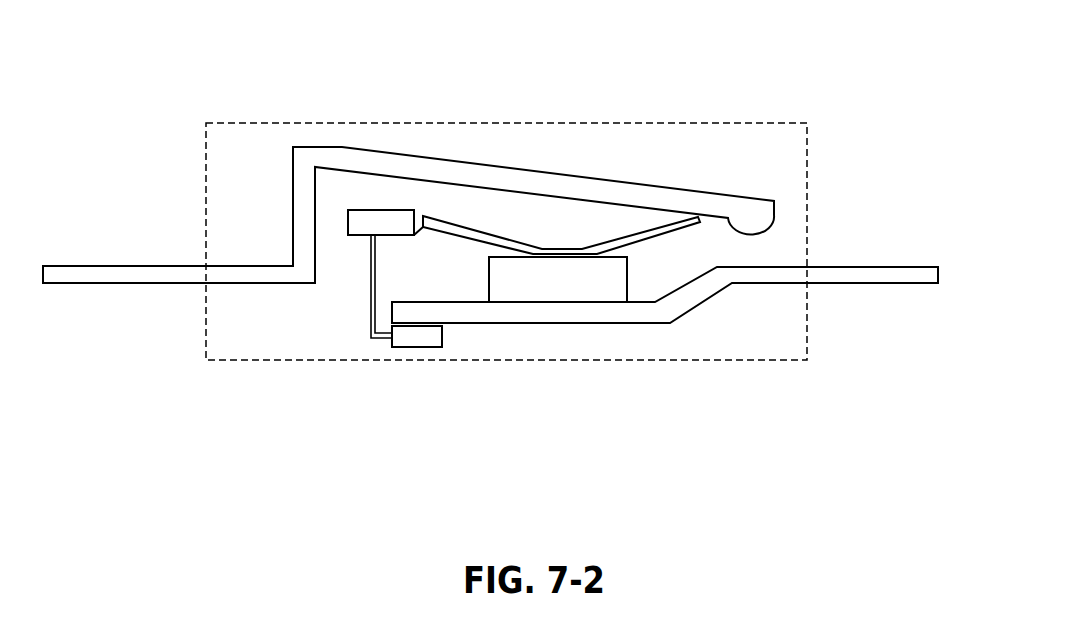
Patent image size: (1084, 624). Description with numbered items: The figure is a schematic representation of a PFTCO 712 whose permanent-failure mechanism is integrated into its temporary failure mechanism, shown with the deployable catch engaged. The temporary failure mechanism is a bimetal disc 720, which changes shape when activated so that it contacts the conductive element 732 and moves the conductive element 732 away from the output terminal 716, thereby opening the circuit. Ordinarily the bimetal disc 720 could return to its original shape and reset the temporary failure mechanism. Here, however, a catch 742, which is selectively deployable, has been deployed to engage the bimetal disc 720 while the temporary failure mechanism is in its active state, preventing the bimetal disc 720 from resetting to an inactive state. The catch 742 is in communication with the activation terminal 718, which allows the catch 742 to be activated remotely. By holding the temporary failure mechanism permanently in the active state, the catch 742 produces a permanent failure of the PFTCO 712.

The PFTCO 712 is at (862, 86).
The conductive element 732 is at (316, 158).
The catch 742 is at (421, 216).
The bimetal disc 720 is at (630, 233).
The activation terminal 718 is at (419, 338).
The output terminal 716 is at (873, 278).